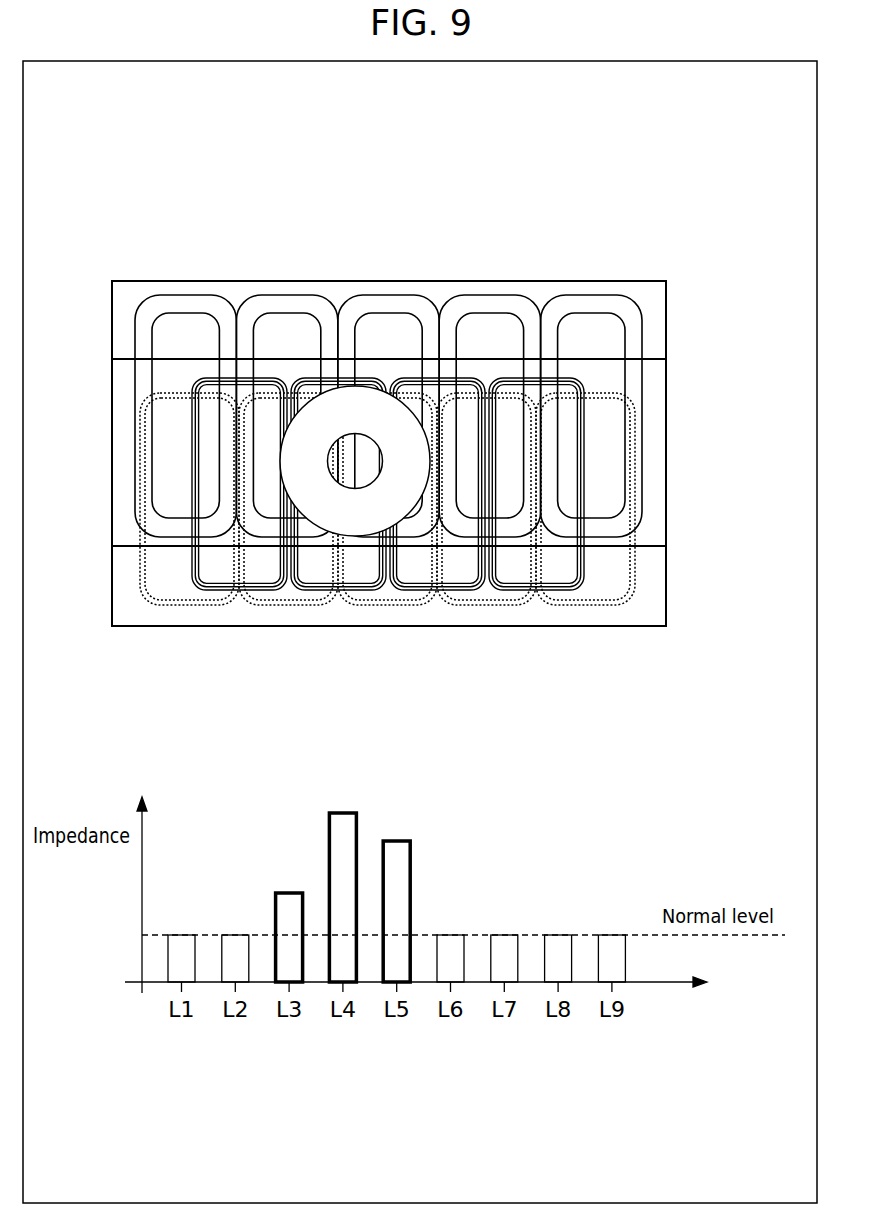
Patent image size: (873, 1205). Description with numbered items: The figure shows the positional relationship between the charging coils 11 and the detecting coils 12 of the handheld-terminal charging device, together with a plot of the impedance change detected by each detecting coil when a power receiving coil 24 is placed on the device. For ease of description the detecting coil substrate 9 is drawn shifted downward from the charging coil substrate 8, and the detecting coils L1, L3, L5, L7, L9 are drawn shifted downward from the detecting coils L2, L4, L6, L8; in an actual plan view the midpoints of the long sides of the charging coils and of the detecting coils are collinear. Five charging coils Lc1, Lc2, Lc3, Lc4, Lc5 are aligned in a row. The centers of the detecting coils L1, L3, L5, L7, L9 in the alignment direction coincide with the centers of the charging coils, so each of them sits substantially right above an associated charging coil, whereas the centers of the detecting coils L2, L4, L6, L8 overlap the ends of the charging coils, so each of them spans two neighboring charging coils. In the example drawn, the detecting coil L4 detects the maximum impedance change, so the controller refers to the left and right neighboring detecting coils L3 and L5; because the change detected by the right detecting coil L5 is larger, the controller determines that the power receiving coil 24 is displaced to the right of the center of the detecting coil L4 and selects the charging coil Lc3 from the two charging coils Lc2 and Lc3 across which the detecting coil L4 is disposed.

The charging coil substrate 8 is at (667, 332).
The detecting coil substrate 9 is at (667, 602).
The charging coils 11 is at (388, 329).
The detecting coils 12 is at (391, 581).
The power receiving coil 24 is at (422, 440).
The charging coil Lc1 is at (186, 297).
The charging coil Lc2 is at (289, 297).
The charging coil Lc3 is at (390, 297).
The charging coil Lc4 is at (486, 297).
The charging coil Lc5 is at (591, 354).
The detecting coil L1 is at (220, 612).
The detecting coil L2 is at (258, 590).
The detecting coil L3 is at (317, 612).
The detecting coil L4 is at (358, 590).
The detecting coil L5 is at (417, 612).
The detecting coil L6 is at (457, 590).
The detecting coil L7 is at (514, 612).
The detecting coil L8 is at (536, 542).
The detecting coil L9 is at (616, 612).